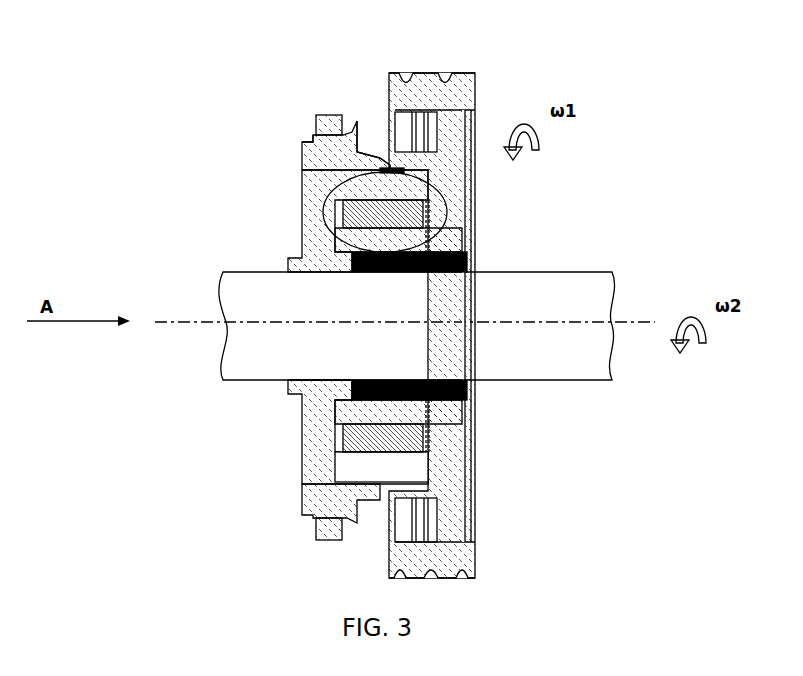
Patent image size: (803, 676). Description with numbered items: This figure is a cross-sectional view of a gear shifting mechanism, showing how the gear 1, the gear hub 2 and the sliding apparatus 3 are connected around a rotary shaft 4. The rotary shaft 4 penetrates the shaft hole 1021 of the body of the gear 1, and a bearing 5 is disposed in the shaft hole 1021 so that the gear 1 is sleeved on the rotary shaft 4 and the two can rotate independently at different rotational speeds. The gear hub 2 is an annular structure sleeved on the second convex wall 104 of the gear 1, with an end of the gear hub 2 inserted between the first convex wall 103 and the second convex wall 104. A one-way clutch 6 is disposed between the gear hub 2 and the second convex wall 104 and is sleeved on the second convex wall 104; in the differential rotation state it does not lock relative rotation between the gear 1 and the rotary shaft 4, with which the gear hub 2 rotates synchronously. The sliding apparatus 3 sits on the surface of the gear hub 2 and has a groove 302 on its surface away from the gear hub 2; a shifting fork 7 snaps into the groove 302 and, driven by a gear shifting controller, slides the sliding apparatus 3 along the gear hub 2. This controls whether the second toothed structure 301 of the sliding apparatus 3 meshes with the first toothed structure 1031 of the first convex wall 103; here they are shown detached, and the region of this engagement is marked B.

The gear 1 is at (450, 137).
The gear hub 2 is at (345, 196).
The sliding apparatus 3 is at (325, 153).
The rotary shaft 4 is at (554, 360).
The bearing 5 is at (463, 257).
The one-way clutch 6 is at (393, 220).
The shifting fork 7 is at (313, 118).
The first convex wall 103 is at (400, 160).
The second convex wall 104 is at (383, 240).
The second toothed structure 301 is at (380, 150).
The groove 302 is at (307, 137).
The shaft hole 1021 is at (337, 380).
The first toothed structure 1031 is at (390, 155).
The detail region B is at (325, 220).